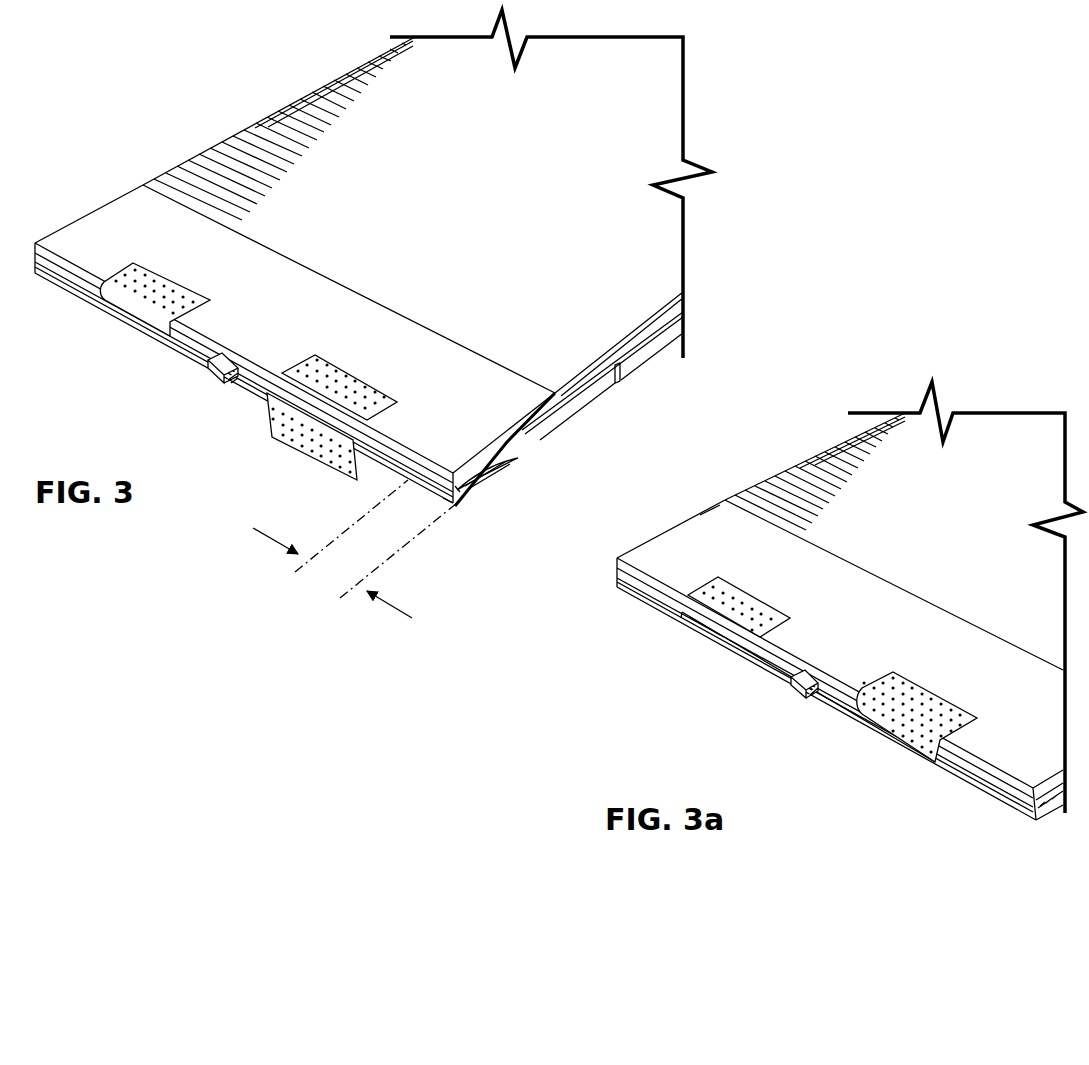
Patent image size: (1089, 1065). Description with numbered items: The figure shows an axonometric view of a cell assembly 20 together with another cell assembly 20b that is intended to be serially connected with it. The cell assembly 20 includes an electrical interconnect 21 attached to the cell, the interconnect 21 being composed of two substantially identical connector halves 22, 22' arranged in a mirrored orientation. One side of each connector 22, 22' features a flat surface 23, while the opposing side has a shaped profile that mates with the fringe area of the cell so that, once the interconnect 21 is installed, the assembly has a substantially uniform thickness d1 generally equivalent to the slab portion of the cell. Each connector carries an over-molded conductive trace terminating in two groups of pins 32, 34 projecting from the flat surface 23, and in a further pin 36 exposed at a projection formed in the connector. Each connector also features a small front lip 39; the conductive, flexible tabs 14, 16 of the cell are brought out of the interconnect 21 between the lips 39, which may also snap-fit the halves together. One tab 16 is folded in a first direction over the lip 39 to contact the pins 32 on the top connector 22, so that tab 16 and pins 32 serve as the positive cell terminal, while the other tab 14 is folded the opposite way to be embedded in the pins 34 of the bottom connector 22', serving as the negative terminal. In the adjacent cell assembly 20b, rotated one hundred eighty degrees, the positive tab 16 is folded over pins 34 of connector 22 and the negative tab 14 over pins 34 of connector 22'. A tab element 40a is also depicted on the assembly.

In FIG. 3, the cell assembly 20 is at (371, 164).
In FIG. 3, the electrical interconnect 21 is at (237, 278).
In FIG. 3, the flat surface 23 is at (203, 242).
In FIG. 3, the pins 32 is at (153, 268).
In FIG. 3A, the pins 32 is at (748, 625).
In FIG. 3, the tab 16 is at (132, 273).
In FIG. 3A, the tab 16 is at (877, 720).
In FIG. 3, the pin 36 is at (207, 366).
In FIG. 3, the tab 14 is at (318, 458).
In FIG. 3A, the tab 14 is at (700, 623).
In FIG. 3, the thickness d1 is at (355, 549).
In FIG. 3, the front lip 39 is at (443, 498).
In FIG. 3, the pins 34 is at (465, 495).
In FIG. 3A, the pins 34 is at (890, 730).
In FIG. 3, the connector half 22' is at (534, 492).
In FIG. 3A, the connector half 22' is at (986, 809).
In FIG. 3, the connector half 22 is at (602, 389).
In FIG. 3A, the connector half 22 is at (725, 481).
In FIG. 3, the tab 40a is at (630, 367).
In FIG. 3A, the second cell assembly 20b is at (880, 473).